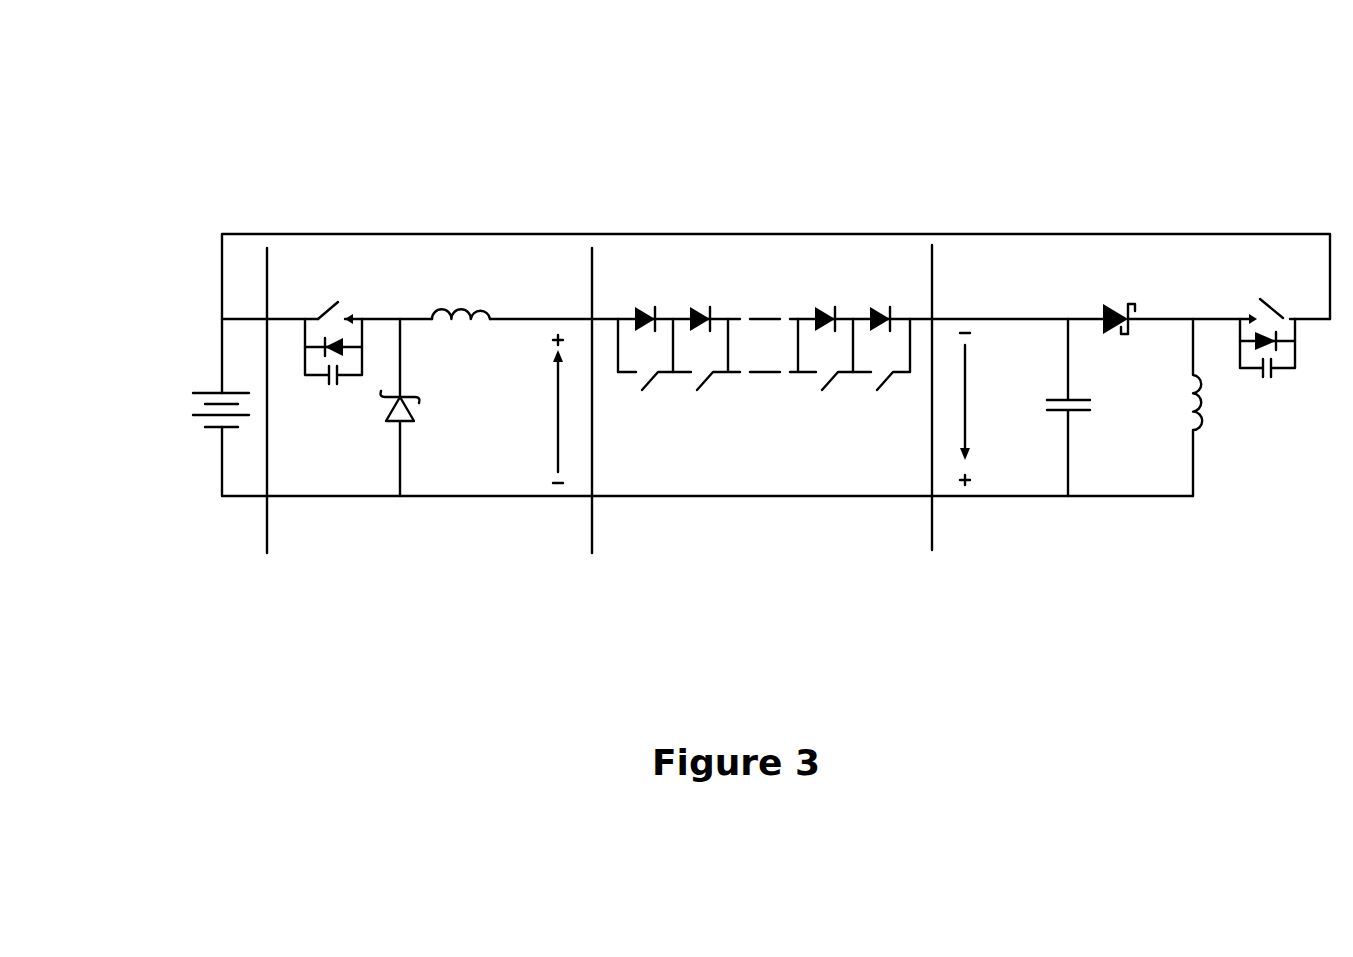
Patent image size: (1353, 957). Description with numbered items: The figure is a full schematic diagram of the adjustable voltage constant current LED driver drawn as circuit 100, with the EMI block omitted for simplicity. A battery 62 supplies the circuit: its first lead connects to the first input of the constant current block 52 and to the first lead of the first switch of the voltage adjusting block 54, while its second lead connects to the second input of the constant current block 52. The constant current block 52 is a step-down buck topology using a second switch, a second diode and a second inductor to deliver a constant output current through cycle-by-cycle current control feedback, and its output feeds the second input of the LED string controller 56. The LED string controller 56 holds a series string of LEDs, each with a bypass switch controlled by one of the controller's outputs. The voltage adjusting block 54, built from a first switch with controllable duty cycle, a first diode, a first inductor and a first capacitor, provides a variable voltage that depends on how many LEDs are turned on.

The circuit 100 is at (376, 122).
The battery 62 is at (222, 388).
The constant current block 52 is at (336, 570).
The LED string controller 56 is at (684, 550).
The voltage adjusting block 54 is at (1068, 573).